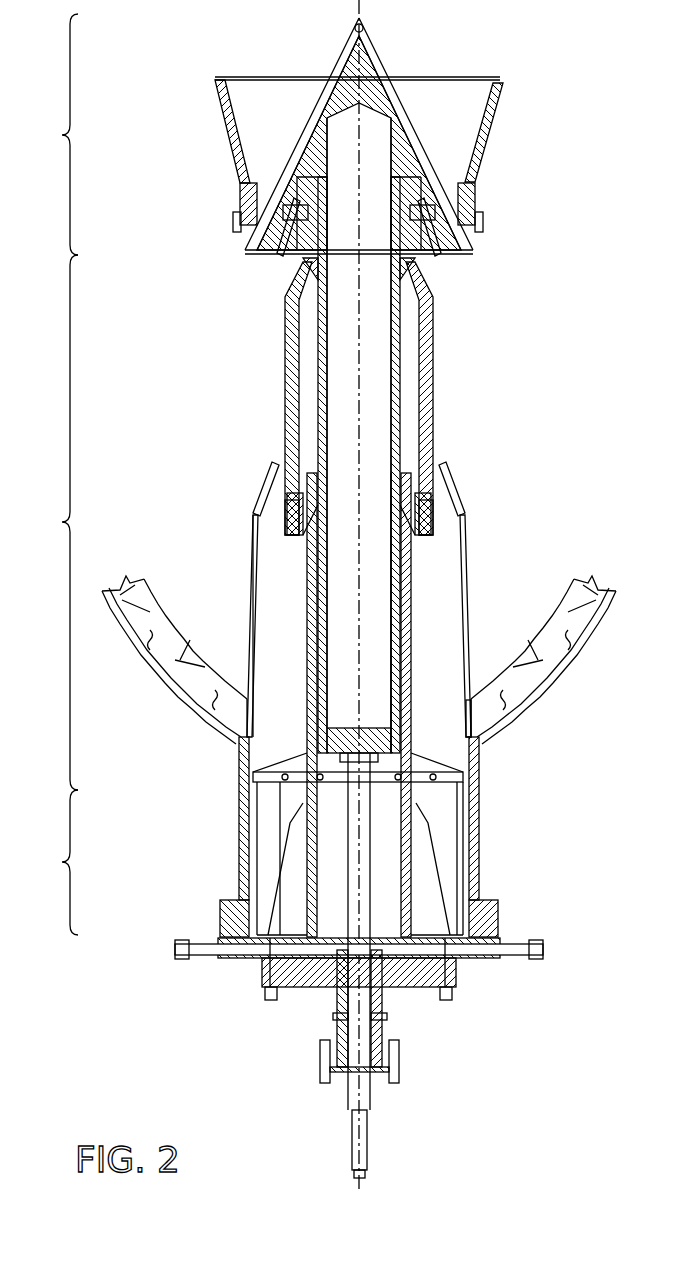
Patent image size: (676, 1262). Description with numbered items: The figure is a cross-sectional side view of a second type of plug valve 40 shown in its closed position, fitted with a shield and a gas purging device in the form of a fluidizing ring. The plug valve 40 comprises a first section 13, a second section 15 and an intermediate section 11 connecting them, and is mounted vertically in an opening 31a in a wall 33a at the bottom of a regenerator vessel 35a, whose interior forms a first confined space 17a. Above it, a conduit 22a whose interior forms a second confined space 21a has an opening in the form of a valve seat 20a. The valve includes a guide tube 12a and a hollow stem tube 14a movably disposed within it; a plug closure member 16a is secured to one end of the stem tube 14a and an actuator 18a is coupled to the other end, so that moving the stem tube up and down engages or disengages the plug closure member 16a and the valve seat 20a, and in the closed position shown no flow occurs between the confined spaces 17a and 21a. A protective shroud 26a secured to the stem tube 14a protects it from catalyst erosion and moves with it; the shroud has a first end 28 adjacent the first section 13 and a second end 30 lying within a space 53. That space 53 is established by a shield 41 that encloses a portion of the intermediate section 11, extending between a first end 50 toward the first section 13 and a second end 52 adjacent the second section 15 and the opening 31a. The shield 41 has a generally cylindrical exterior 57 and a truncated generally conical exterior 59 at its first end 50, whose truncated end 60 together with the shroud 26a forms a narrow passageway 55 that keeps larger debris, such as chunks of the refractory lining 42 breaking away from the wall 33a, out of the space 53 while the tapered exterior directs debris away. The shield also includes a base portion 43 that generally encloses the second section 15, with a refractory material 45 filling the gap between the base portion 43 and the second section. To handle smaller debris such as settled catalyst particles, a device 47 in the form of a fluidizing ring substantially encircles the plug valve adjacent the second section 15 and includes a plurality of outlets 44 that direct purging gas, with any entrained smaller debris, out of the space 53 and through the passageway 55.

The first section 13 is at (44, 134).
The intermediate section 11 is at (47, 522).
The second section 15 is at (47, 862).
The plug closure member 16a is at (403, 92).
The second confined space 21a is at (290, 115).
The conduit 22a is at (493, 127).
The valve seat 20a is at (467, 236).
The first end of the shroud 28 is at (427, 280).
The protective shroud 26a is at (434, 345).
The plug valve 40 is at (472, 392).
The first end of the shield 50 is at (262, 478).
The truncated generally conical exterior 59 is at (450, 490).
The passageway 55 is at (430, 465).
The truncated end 60 is at (283, 462).
The second end of the shroud 30 is at (285, 527).
The space 53 is at (296, 652).
The guide tube 12a is at (412, 570).
The stem tube 14a is at (398, 552).
The shield 41 is at (250, 578).
The first confined space 17a is at (205, 509).
The generally cylindrical exterior 57 is at (468, 583).
The opening in the wall 31a is at (472, 697).
The refractory lining 42 is at (158, 615).
The regenerator vessel 35a is at (182, 720).
The wall 33a is at (547, 697).
The outlets 44 is at (400, 773).
The device 47 is at (280, 797).
The refractory material 45 is at (452, 868).
The base portion 43 is at (470, 835).
The second end of the shield 52 is at (250, 841).
The actuator 18a is at (368, 1137).